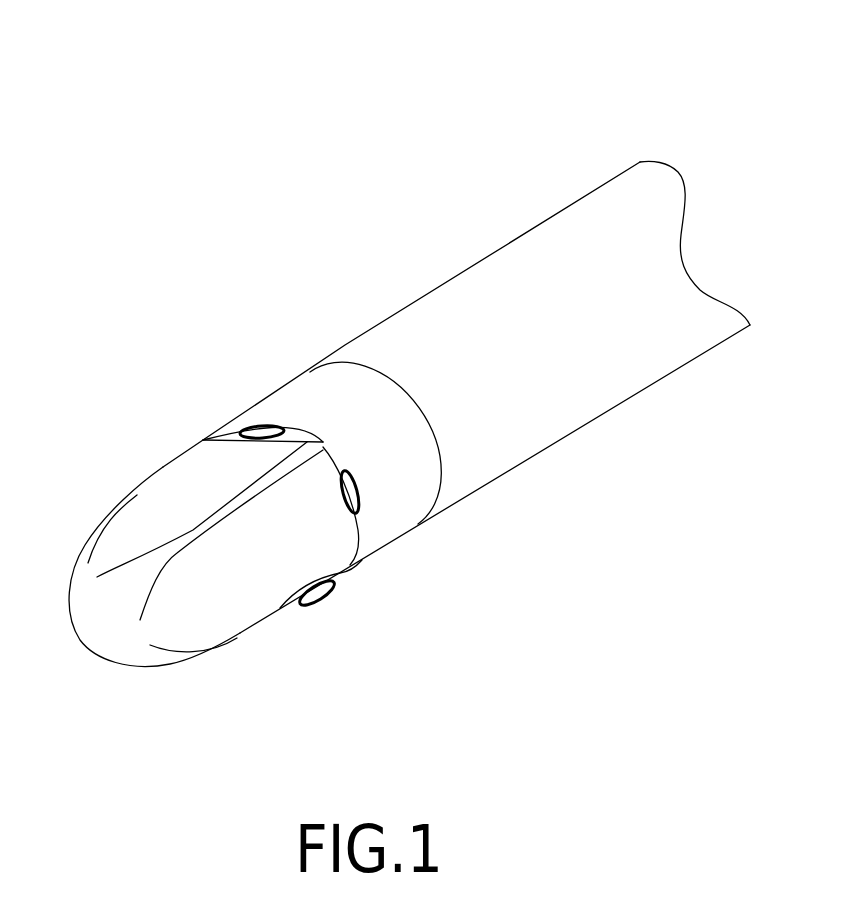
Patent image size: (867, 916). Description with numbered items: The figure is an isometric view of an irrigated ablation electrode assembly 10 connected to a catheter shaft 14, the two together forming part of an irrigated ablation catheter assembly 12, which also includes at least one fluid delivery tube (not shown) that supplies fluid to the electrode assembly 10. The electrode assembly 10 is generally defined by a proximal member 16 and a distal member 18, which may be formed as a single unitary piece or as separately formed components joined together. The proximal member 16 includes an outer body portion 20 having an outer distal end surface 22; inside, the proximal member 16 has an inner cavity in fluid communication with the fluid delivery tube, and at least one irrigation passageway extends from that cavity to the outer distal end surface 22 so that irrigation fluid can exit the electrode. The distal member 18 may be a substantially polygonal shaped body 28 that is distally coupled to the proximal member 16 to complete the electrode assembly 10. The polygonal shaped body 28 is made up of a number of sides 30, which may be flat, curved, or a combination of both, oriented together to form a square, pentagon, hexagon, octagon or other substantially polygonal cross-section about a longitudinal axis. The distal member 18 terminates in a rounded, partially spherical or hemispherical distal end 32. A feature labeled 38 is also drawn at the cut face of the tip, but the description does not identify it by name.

The irrigated ablation electrode assembly 10 is at (164, 341).
The irrigated ablation catheter assembly 12 is at (220, 128).
The catheter shaft 14 is at (490, 256).
The proximal member 16 is at (430, 617).
The distal member 18 is at (196, 720).
The outer body portion 20 is at (397, 500).
The outer distal end surface 22 is at (280, 613).
The substantially polygonal shaped body 28 is at (168, 465).
The sides 30 is at (150, 502).
The rounded distal end 32 is at (88, 628).
The upper opening 38 is at (260, 423).